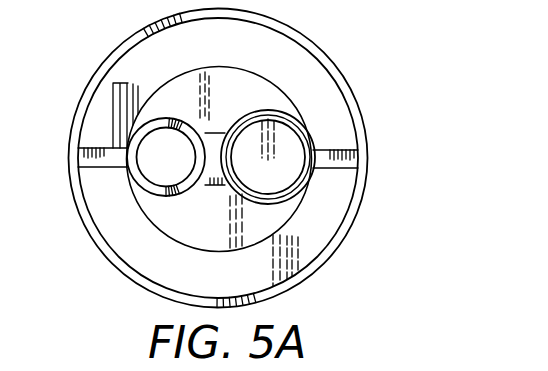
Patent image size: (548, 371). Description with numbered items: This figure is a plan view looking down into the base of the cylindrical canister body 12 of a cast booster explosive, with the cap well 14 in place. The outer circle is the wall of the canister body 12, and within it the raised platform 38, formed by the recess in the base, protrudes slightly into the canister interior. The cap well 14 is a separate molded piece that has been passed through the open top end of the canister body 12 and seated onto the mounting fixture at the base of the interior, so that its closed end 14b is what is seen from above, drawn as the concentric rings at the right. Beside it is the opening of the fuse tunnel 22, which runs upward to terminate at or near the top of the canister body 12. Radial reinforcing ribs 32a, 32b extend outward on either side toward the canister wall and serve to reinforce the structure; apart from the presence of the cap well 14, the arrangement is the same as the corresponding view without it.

The canister body 12 is at (313, 37).
The cap well 14 is at (280, 114).
The closed end 14b is at (288, 157).
The fuse tunnel 22 is at (161, 118).
The radial reinforcing rib 32a is at (100, 157).
The radial reinforcing rib 32b is at (329, 160).
The raised platform 38 is at (217, 230).